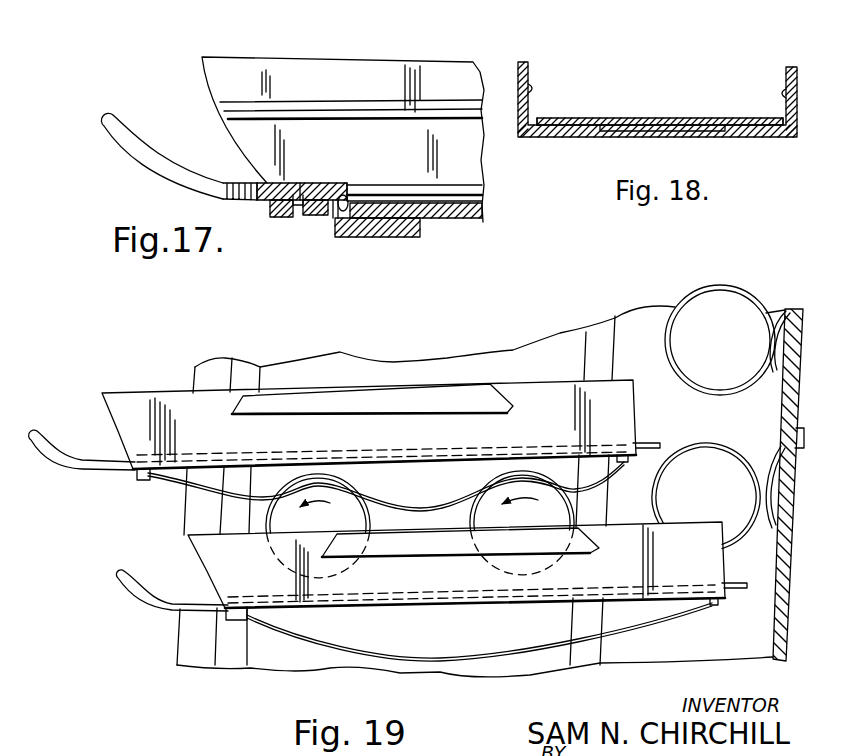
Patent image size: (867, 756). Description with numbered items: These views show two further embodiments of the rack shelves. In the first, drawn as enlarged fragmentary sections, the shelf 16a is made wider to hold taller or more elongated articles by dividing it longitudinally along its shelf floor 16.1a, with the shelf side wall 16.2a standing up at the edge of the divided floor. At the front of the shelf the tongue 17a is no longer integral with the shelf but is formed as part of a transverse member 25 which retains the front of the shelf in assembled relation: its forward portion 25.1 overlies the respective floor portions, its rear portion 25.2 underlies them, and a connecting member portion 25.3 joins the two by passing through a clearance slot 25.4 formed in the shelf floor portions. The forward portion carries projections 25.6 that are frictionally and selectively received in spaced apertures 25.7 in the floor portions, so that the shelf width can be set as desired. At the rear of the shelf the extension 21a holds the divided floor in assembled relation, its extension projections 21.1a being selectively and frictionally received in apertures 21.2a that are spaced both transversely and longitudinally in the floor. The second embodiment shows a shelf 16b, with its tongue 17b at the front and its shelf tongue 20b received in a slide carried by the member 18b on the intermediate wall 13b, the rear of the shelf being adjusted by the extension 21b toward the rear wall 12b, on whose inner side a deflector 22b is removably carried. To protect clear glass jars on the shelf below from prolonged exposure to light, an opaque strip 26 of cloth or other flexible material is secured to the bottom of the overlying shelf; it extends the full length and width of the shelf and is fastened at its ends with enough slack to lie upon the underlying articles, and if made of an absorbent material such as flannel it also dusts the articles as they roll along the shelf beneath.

In FIG. 17, the shelf 16a is at (327, 58).
In FIG. 18, the shelf 16a is at (531, 68).
In FIG. 17, the shelf side wall 16.2a is at (442, 75).
In FIG. 18, the shelf side wall 16.2a is at (783, 78).
In FIG. 18, the shelf floor 16.1a is at (733, 138).
In FIG. 17, the tongue 17a is at (120, 140).
In FIG. 17, the transverse member 25 is at (330, 178).
In FIG. 17, the forward portion 25.1 is at (302, 197).
In FIG. 17, the rear portion 25.2 is at (420, 233).
In FIG. 17, the connecting member portion 25.3 is at (337, 216).
In FIG. 17, the clearance slot 25.4 is at (348, 190).
In FIG. 17, the projections 25.6 is at (302, 218).
In FIG. 17, the spaced apertures 25.7 is at (287, 182).
In FIG. 18, the extension 21a is at (643, 120).
In FIG. 18, the extension projections 21.1a is at (568, 137).
In FIG. 18, the apertures 21.2a is at (635, 131).
In FIG. 19, the rear wall 12b is at (790, 643).
In FIG. 19, the intermediate wall 13b is at (368, 370).
In FIG. 19, the shelf 16b is at (147, 391).
In FIG. 19, the tongue 17b is at (57, 466).
In FIG. 19, the member 18b is at (264, 378).
In FIG. 19, the shelf tongue 20b is at (445, 395).
In FIG. 19, the extension 21b is at (642, 443).
In FIG. 19, the deflector 22b is at (773, 372).
In FIG. 19, the opaque strip 26 is at (405, 511).